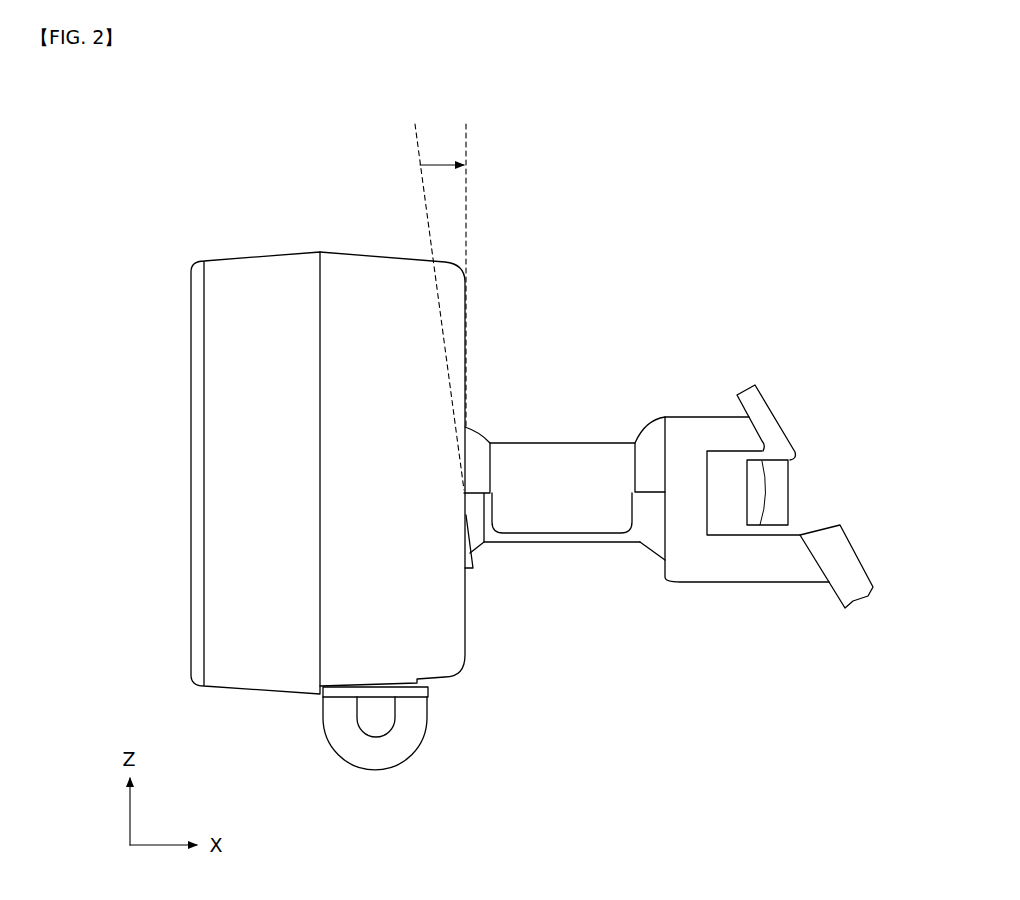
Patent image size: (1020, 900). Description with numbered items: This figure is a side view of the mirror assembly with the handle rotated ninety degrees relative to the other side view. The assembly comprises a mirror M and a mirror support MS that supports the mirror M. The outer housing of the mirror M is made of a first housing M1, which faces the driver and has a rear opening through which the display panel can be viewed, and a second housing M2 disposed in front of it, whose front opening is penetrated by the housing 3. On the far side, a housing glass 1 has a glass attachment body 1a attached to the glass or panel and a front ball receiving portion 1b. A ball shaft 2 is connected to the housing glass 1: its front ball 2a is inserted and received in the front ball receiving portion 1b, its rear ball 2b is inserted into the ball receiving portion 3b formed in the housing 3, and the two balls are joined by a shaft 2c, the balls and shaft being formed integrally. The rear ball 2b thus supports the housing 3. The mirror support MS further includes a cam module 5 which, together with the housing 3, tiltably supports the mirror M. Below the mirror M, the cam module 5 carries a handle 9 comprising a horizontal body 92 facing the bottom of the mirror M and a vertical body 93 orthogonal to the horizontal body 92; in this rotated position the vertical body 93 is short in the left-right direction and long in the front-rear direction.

The mirror M is at (165, 212).
The first housing M1 is at (265, 281).
The second housing M2 is at (390, 279).
The mirror support MS is at (677, 340).
The housing glass 1 is at (893, 380).
The glass attachment body 1a is at (755, 402).
The front ball receiving portion 1b is at (693, 517).
The ball shaft 2 is at (628, 357).
The front ball 2a is at (650, 449).
The rear ball 2b is at (477, 449).
The shaft 2c is at (630, 533).
The housing 3 is at (476, 557).
The ball receiving portion 3b is at (474, 568).
The cam module 5 is at (468, 716).
The handle 9 is at (388, 835).
The horizontal body 92 is at (342, 698).
The vertical body 93 is at (378, 757).